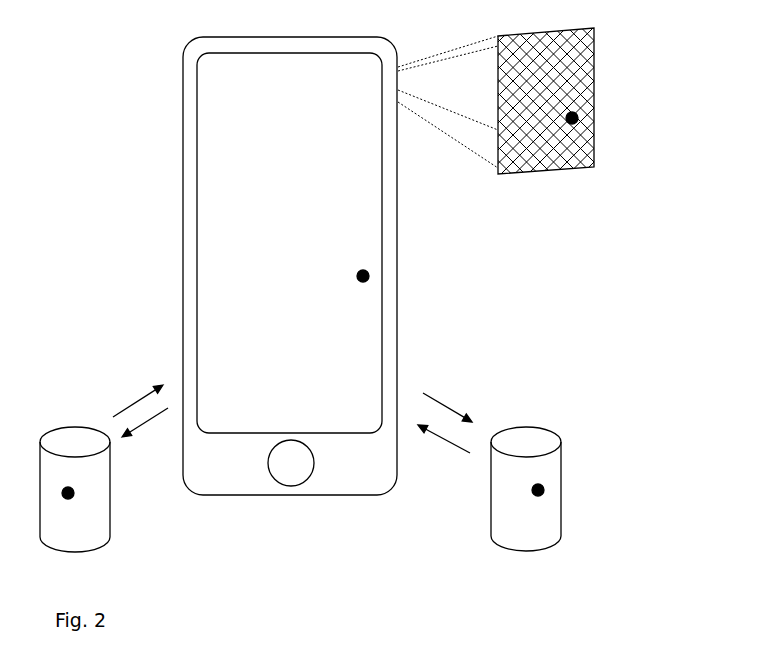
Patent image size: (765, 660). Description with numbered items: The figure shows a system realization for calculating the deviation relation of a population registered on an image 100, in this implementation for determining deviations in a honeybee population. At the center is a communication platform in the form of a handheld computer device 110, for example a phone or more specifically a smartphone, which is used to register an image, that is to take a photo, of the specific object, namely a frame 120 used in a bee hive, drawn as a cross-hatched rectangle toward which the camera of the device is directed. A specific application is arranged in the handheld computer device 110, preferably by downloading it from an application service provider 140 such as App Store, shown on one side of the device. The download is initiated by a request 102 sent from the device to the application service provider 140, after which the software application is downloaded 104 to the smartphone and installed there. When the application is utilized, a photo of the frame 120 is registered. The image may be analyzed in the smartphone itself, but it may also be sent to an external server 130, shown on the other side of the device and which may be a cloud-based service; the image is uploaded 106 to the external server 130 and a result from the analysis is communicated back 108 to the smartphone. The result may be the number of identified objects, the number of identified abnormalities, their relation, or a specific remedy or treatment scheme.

The system realization for calculating the deviation relation of a population regist 100 is at (63, 170).
The handheld computer device 110 is at (363, 276).
The frame 120 is at (572, 118).
The external server 130 is at (538, 490).
The application service provider 140 is at (68, 493).
The request 102 is at (145, 440).
The download 104 is at (130, 392).
The upload 106 is at (447, 395).
The communication of result 108 is at (444, 450).